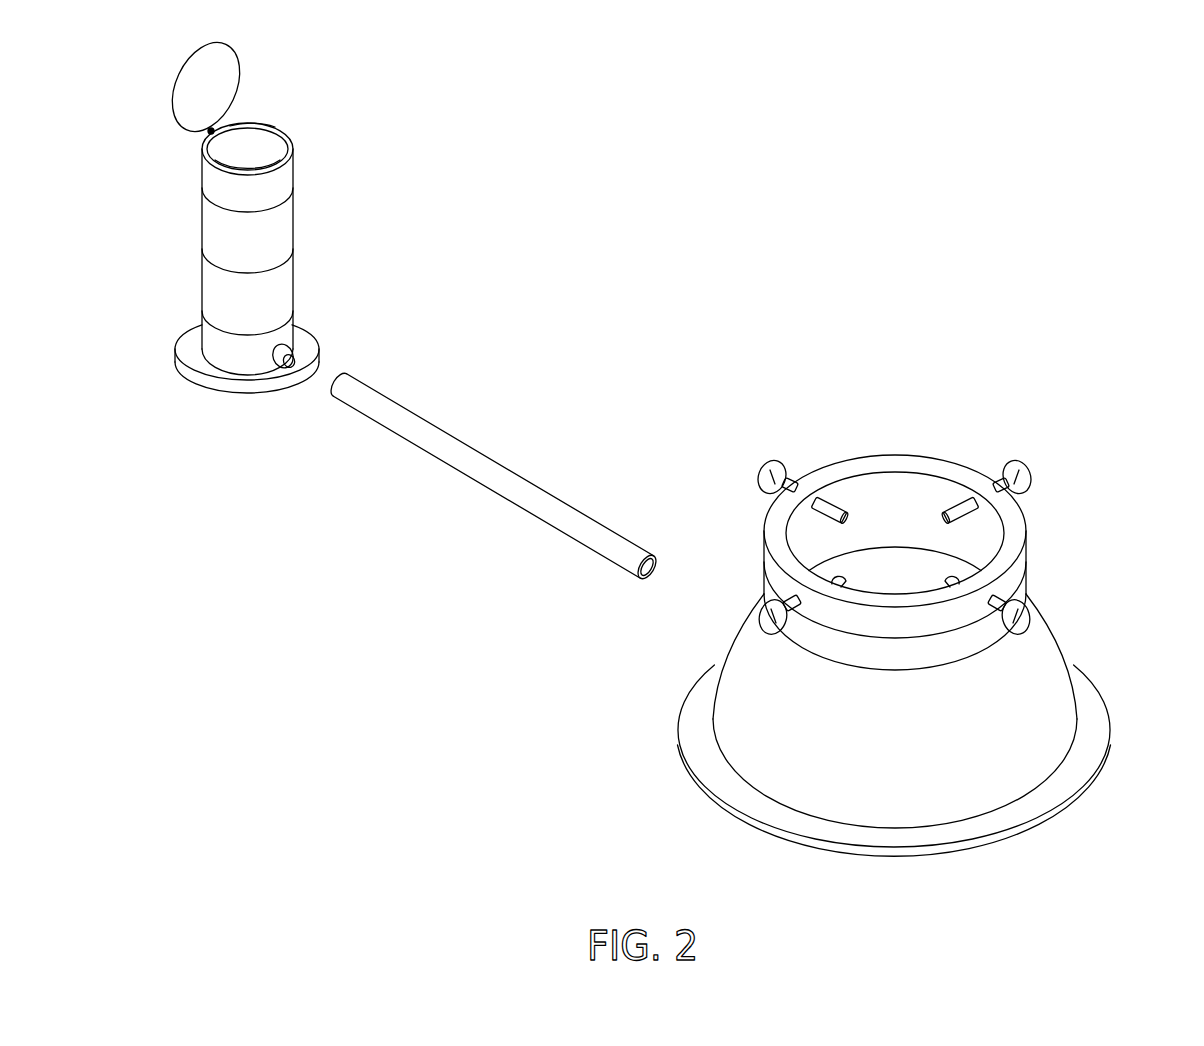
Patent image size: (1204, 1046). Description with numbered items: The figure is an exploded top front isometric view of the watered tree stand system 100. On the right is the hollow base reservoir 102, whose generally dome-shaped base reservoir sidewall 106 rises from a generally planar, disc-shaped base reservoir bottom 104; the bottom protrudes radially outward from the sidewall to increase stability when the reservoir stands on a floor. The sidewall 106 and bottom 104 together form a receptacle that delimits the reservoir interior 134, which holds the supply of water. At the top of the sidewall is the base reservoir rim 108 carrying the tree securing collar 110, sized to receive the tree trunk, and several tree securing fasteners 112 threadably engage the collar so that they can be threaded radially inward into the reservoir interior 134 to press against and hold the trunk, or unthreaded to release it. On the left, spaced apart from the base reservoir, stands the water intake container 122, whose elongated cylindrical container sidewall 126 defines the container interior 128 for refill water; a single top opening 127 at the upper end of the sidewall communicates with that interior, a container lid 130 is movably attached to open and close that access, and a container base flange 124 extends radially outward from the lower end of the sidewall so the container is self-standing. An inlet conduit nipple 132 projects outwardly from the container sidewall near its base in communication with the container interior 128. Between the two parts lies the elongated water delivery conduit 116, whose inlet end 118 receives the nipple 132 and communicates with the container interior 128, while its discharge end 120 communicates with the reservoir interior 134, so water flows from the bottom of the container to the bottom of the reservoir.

The watered tree stand system 100 is at (742, 238).
The base reservoir 102 is at (957, 430).
The base reservoir bottom 104 is at (1089, 763).
The base reservoir sidewall 106 is at (1053, 700).
The base reservoir rim 108 is at (934, 655).
The tree securing collar 110 is at (1016, 530).
The tree securing fasteners 112 is at (770, 463).
The water delivery conduit 116 is at (482, 478).
The inlet end 118 is at (333, 390).
The discharge end 120 is at (637, 578).
The water intake container 122 is at (301, 222).
The container base flange 124 is at (308, 347).
The container sidewall 126 is at (283, 290).
The top opening 127 is at (254, 124).
The container interior 128 is at (258, 154).
The container lid 130 is at (220, 68).
The inlet conduit nipple 132 is at (277, 365).
The reservoir interior 134 is at (868, 565).